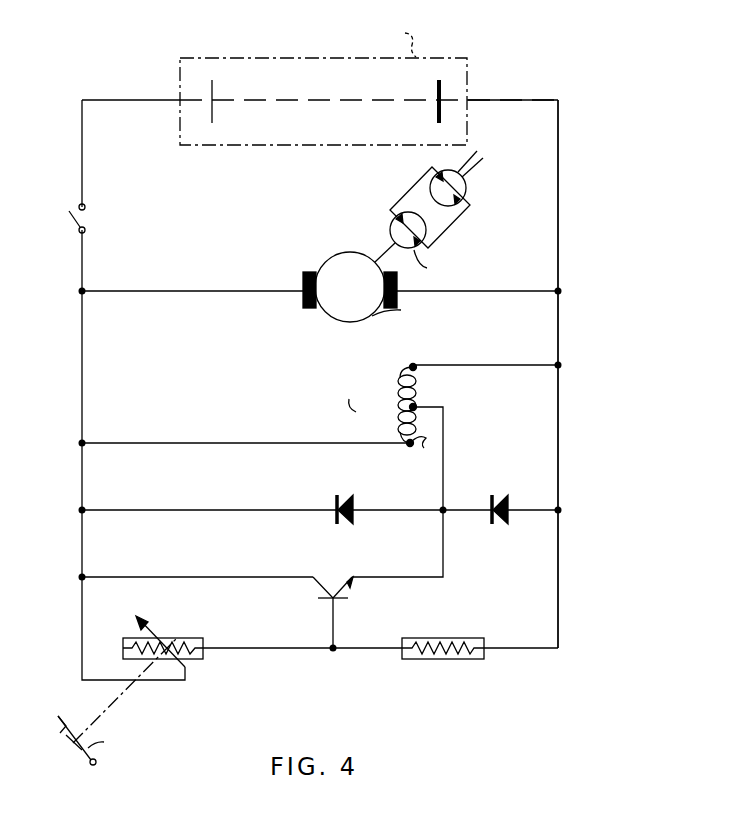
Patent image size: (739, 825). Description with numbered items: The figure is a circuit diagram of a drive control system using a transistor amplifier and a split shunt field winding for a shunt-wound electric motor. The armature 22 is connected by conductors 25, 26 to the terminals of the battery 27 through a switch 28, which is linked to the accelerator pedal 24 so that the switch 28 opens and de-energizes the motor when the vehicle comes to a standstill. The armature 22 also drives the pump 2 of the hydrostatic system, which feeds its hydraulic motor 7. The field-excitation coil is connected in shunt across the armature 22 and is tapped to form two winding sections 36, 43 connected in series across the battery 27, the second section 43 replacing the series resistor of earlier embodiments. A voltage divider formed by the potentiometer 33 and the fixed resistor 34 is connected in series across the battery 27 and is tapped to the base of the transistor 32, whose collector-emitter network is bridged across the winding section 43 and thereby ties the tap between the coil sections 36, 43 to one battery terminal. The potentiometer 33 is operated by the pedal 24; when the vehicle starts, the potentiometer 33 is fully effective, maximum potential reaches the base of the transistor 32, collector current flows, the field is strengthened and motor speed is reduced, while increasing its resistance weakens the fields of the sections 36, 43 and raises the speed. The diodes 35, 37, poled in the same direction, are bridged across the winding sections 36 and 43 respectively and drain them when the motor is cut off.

The pump 2 is at (389, 227).
The motor 7 is at (467, 186).
The armature 22 is at (334, 256).
The accelerator pedal 24 is at (65, 741).
The conductor 25 is at (559, 158).
The conductor 26 is at (145, 100).
The battery 27 is at (249, 145).
The switch 28 is at (70, 223).
The transistor 32 is at (330, 595).
The potentiometer 33 is at (176, 638).
The fixed resistor 34 is at (446, 638).
The diode 35 is at (509, 500).
The field coil section 36 is at (397, 406).
The diode 37 is at (356, 500).
The field coil section 43 is at (411, 454).